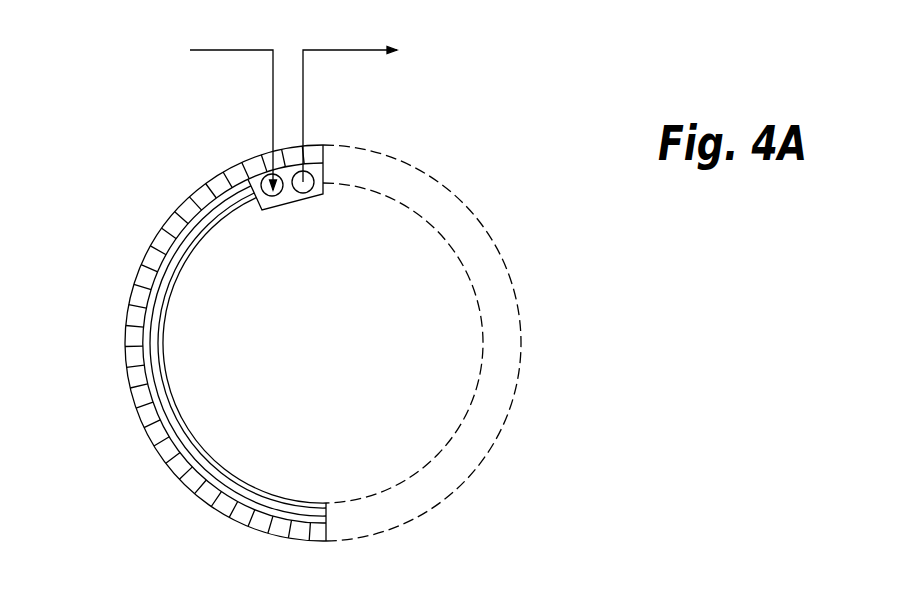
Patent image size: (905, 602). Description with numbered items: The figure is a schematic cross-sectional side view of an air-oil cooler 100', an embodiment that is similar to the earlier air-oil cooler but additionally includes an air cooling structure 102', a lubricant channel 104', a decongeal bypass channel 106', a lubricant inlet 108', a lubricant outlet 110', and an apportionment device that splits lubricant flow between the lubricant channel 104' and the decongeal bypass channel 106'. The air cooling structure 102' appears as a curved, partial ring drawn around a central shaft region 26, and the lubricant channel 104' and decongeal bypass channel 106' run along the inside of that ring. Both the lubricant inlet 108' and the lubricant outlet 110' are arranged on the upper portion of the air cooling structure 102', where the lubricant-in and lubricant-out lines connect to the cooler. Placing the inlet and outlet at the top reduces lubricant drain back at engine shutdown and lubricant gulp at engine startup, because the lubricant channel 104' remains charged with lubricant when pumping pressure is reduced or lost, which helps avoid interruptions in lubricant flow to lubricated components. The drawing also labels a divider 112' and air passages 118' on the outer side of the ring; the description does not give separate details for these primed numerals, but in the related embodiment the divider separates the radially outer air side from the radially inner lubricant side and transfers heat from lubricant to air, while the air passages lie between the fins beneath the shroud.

The air-oil cooler 100' is at (276, 298).
The air cooling structure 102' is at (187, 365).
The lubricant channel 104' is at (238, 351).
The decongeal bypass channel 106' is at (242, 350).
The lubricant inlet 108' is at (198, 114).
The lubricant outlet 110' is at (401, 102).
The outer surface 112' is at (214, 343).
The tile segments 118' is at (186, 343).
The shaft 26 is at (328, 340).